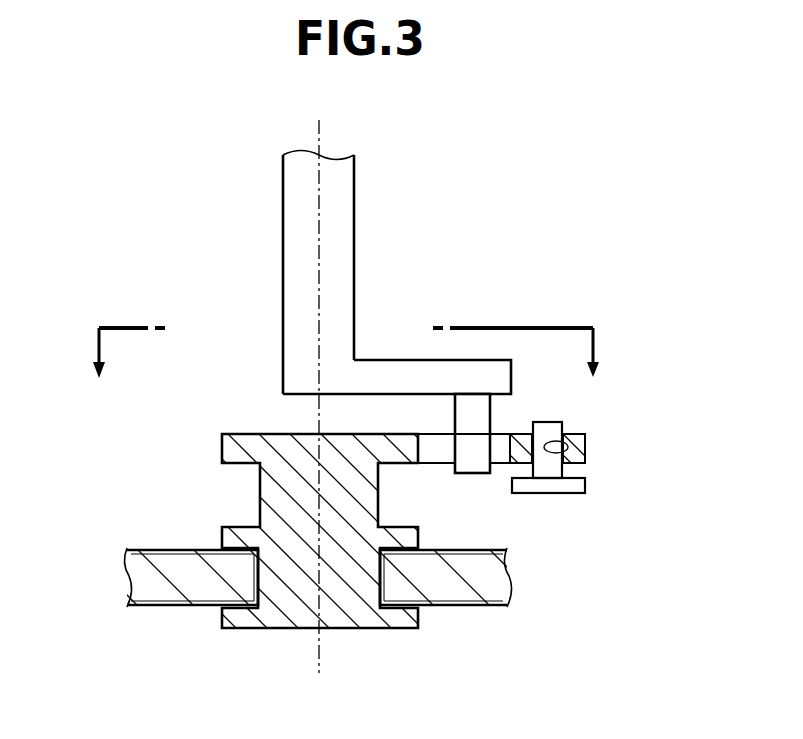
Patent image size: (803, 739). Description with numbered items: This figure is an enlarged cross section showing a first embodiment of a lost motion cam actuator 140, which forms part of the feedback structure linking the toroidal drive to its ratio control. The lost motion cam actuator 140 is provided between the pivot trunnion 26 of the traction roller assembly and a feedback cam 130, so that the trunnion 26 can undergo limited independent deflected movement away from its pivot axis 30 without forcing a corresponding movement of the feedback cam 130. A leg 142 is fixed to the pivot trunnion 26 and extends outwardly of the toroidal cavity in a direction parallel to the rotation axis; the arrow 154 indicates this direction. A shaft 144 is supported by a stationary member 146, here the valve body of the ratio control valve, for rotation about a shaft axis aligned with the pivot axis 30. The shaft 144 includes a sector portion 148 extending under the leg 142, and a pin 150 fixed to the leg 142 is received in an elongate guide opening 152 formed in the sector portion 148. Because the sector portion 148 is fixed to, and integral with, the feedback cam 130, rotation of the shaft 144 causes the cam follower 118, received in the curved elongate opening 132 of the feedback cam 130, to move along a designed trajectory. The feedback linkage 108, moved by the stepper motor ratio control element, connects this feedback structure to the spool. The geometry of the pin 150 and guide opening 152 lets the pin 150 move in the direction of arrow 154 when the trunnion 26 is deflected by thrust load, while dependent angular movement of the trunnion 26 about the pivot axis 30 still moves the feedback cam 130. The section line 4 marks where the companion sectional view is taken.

The pivot trunnion 26 is at (355, 209).
The leg 142 is at (403, 358).
The sector portion 148 is at (258, 432).
The pin 150 is at (492, 414).
The elongate guide opening 152 is at (418, 445).
The arrow 154 is at (677, 302).
The feedback cam 130 is at (518, 437).
The cam follower 118 is at (550, 430).
The curved elongate opening 132 is at (568, 447).
The feedback linkage 108 is at (575, 485).
The lost motion cam actuator 140 is at (176, 484).
The shaft 144 is at (260, 513).
The stationary member 146 is at (478, 598).
The pivot axis 30 is at (323, 652).
The section line 4- 4 is at (98, 345).